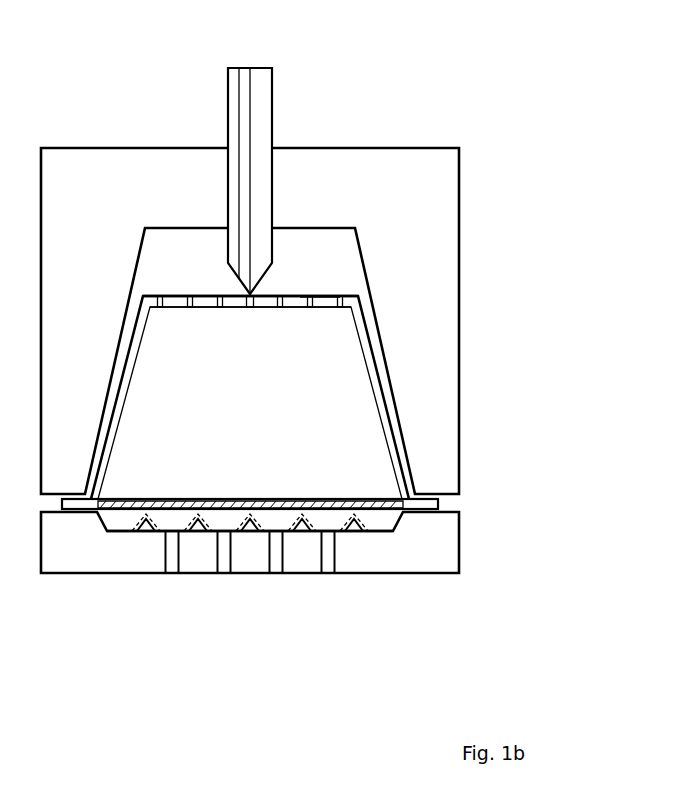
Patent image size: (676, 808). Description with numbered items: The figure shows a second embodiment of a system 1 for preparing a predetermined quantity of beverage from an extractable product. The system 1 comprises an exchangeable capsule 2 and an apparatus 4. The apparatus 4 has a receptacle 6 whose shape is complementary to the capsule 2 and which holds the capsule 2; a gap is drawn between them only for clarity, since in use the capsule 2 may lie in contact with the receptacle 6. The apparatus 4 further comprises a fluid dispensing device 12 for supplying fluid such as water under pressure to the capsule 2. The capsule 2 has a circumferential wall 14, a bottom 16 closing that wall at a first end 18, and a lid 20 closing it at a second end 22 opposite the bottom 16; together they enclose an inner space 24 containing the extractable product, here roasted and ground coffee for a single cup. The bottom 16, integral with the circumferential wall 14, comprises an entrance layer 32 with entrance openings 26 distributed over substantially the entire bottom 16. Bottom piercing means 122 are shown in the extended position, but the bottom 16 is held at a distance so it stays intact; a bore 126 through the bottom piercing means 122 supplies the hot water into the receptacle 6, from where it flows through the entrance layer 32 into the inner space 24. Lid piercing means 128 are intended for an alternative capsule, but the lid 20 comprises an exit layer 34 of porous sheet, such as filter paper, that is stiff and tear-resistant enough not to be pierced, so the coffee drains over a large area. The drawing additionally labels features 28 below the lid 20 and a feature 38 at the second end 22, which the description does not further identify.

The system 1 is at (518, 566).
The exchangeable capsule 2 is at (385, 403).
The apparatus 4 is at (522, 163).
The receptacle 6 is at (459, 251).
The fluid dispensing device 12 is at (272, 73).
The circumferential wall 14 is at (392, 436).
The bottom 16 is at (325, 302).
The first end 18 is at (355, 306).
The lid 20 is at (376, 511).
The second end 22 is at (425, 499).
The inner space 24 is at (186, 398).
The entrance openings 26 is at (249, 293).
The channels in lower tool 28 is at (222, 569).
The entrance layer 32 is at (305, 318).
The exit layer 34 is at (334, 512).
The film / intermediate layer 38 is at (435, 505).
The bottom piercing means 122 is at (272, 117).
The bore 126 is at (243, 67).
The lid piercing means 128 is at (145, 526).